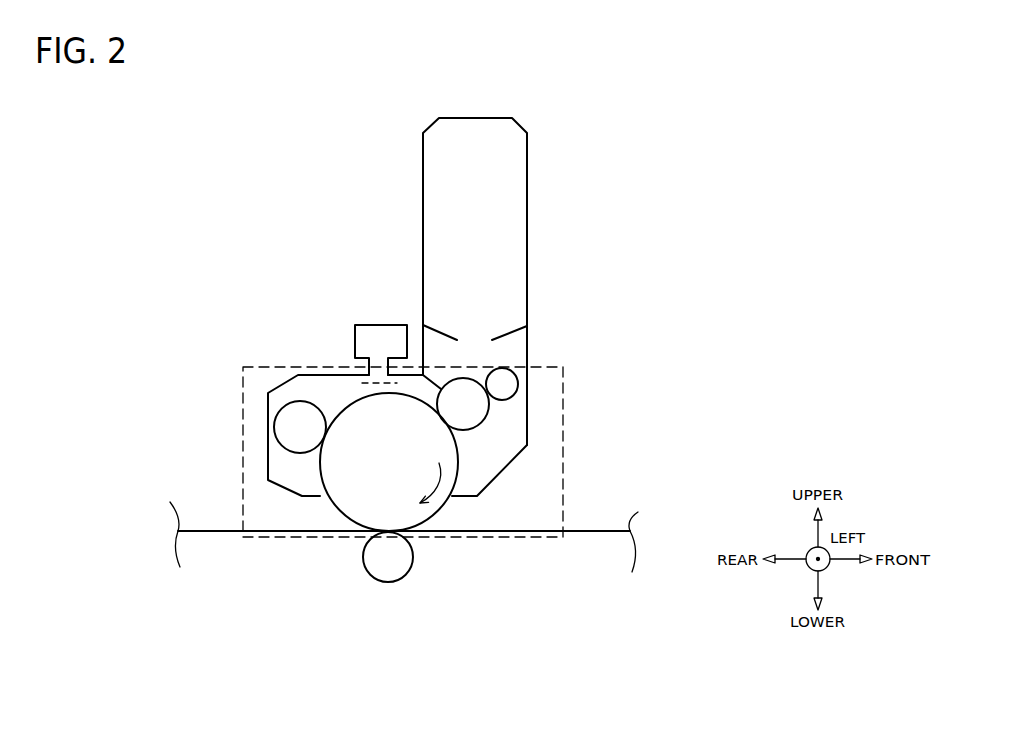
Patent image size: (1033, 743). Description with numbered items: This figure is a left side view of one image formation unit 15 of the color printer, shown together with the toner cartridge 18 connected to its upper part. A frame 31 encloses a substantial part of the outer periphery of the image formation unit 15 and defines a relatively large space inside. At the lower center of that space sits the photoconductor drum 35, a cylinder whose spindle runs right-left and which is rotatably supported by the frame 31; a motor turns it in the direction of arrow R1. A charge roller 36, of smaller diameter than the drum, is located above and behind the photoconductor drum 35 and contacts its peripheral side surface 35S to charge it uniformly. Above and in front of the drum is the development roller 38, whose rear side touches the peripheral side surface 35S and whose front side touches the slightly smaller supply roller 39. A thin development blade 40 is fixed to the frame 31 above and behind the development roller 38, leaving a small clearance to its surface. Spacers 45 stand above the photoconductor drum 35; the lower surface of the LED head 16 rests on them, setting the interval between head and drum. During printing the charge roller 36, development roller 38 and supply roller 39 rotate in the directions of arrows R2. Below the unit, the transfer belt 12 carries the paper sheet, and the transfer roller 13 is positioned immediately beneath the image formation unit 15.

The transfer belt 12 is at (575, 537).
The transfer roller 13 is at (370, 573).
The image formation unit 15 is at (246, 538).
The LED head 16 is at (306, 294).
The toner cartridge 18 is at (527, 178).
The frame 31 is at (268, 484).
The photoconductor drum 35 is at (338, 505).
The peripheral side surface 35S is at (433, 515).
The charge roller 36 is at (287, 415).
The development roller 38 is at (478, 426).
The supply roller 39 is at (518, 390).
The development blade 40 is at (443, 373).
The spacer 45 is at (360, 368).
The arrow R1 is at (444, 504).
The arrows R2 is at (488, 384).